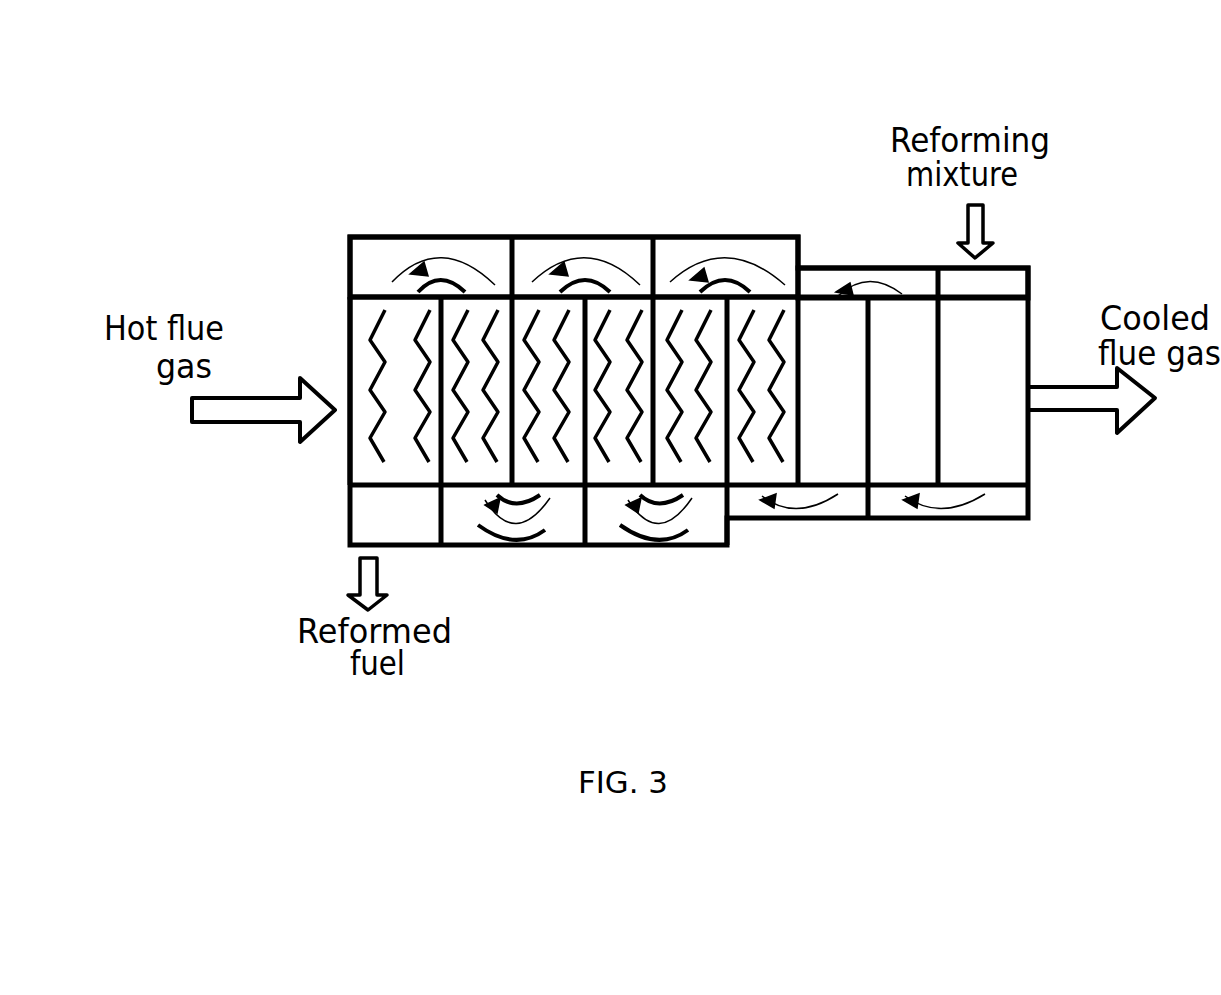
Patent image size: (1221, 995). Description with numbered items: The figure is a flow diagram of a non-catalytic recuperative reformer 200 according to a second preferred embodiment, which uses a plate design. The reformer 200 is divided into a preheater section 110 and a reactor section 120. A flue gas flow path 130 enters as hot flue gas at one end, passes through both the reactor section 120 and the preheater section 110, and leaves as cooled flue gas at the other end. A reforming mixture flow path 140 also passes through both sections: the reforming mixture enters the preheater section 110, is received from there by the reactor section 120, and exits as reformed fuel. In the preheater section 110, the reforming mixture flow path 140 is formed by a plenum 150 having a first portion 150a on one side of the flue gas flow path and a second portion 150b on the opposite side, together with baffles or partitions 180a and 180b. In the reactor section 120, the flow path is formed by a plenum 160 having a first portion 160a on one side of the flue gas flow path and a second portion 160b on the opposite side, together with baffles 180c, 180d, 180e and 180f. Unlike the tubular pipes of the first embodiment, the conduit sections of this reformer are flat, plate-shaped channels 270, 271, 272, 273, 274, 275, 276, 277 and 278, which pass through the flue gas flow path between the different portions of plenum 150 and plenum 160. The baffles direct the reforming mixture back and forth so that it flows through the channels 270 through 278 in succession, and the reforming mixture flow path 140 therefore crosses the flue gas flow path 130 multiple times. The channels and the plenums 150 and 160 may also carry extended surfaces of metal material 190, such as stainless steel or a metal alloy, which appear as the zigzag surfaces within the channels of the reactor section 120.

The reformer 200 is at (1056, 708).
The reactor section 120 is at (505, 155).
The preheater section 110 is at (866, 218).
The flue gas flow path 130 is at (350, 343).
The reforming mixture flow path 140 is at (1010, 268).
The plenum 150 is at (1038, 528).
The first portion of plenum 150a is at (1030, 270).
The second portion of plenum 150b is at (1017, 507).
The plenum 160 is at (383, 224).
The first portion of plenum 160a is at (366, 270).
The second portion of plenum 160b is at (350, 509).
The baffle 180a is at (928, 282).
The baffle 180b is at (862, 498).
The baffle 180c is at (682, 262).
The baffle 180d is at (565, 545).
The baffle 180e is at (537, 262).
The baffle 180f is at (435, 512).
The extended surfaces of metal material 190 is at (352, 327).
The channel 270 is at (996, 460).
The channel 271 is at (892, 455).
The channel 272 is at (840, 455).
The channel 273 is at (761, 455).
The channel 274 is at (701, 458).
The channel 275 is at (623, 455).
The channel 276 is at (560, 452).
The channel 277 is at (481, 450).
The channel 278 is at (421, 447).